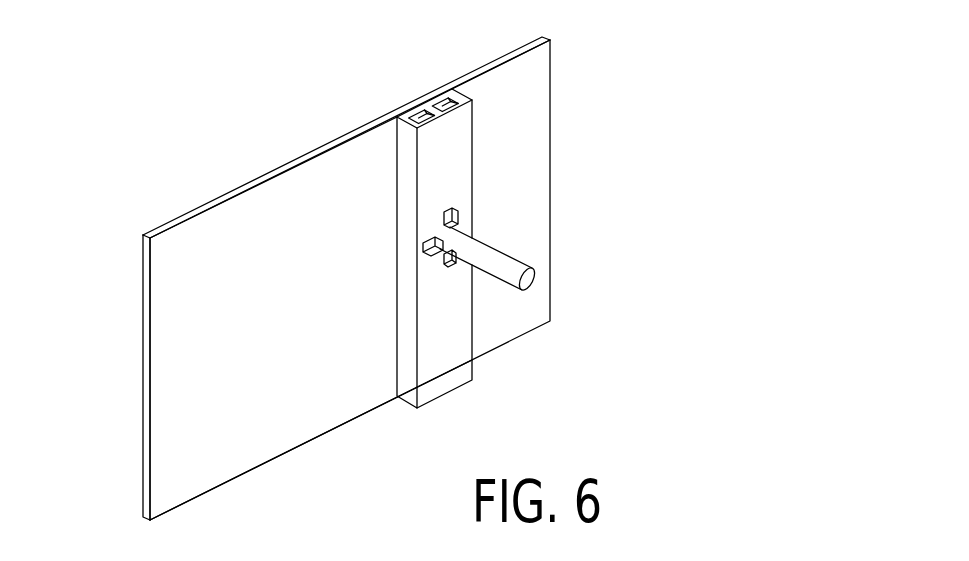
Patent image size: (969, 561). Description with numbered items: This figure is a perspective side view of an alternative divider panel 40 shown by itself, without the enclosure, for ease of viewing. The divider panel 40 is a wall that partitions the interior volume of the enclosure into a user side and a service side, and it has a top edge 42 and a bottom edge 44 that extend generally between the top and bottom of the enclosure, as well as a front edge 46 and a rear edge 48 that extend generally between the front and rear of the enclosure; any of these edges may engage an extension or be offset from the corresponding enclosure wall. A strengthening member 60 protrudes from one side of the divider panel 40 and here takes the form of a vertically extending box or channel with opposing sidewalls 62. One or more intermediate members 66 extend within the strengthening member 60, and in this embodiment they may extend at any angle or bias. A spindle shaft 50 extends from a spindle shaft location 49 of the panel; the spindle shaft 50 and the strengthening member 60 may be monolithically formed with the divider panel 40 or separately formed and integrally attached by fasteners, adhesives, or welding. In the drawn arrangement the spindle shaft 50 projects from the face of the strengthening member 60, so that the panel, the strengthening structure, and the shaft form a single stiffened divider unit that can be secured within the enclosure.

The divider panel 40 is at (106, 135).
The top edge 42 is at (202, 205).
The bottom edge 44 is at (248, 473).
The front edge 46 is at (143, 363).
The rear edge 48 is at (550, 81).
The spindle shaft location 49 is at (489, 255).
The spindle shaft 50 is at (494, 274).
The strengthening member 60 is at (412, 234).
The sidewall 62 is at (423, 213).
The intermediate member 66 is at (433, 97).